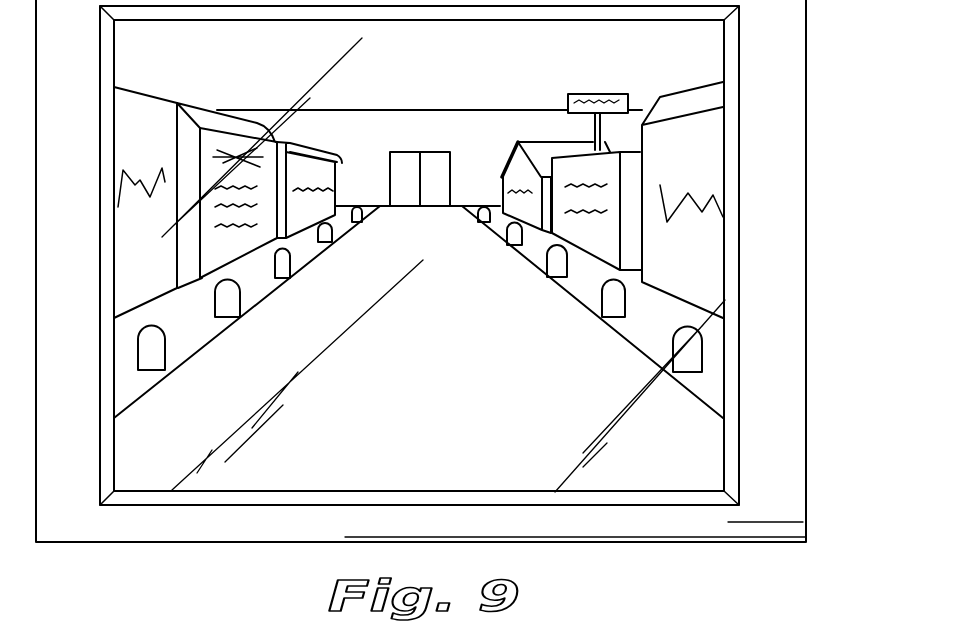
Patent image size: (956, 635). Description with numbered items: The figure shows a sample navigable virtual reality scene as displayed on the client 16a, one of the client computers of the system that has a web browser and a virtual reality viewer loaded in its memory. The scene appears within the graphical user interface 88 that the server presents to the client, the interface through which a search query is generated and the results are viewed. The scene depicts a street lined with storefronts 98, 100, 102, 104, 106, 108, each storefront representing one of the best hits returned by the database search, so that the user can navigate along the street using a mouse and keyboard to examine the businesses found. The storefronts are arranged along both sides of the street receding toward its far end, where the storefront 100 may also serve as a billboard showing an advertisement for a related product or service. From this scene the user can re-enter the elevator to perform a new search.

The client 16a is at (807, 180).
The graphical user interface 88 is at (731, 432).
The storefront 98 is at (242, 262).
The storefront 100 is at (337, 190).
The storefront 102 is at (175, 290).
The storefront 104 is at (498, 193).
The storefront 106 is at (587, 253).
The storefront 108 is at (675, 295).